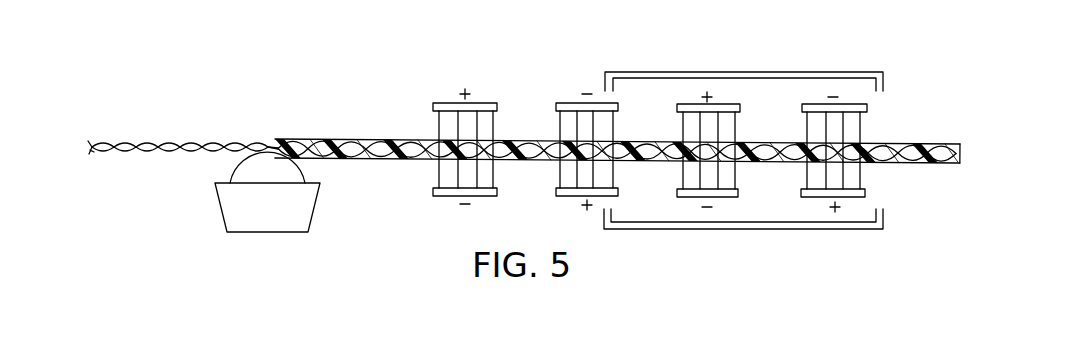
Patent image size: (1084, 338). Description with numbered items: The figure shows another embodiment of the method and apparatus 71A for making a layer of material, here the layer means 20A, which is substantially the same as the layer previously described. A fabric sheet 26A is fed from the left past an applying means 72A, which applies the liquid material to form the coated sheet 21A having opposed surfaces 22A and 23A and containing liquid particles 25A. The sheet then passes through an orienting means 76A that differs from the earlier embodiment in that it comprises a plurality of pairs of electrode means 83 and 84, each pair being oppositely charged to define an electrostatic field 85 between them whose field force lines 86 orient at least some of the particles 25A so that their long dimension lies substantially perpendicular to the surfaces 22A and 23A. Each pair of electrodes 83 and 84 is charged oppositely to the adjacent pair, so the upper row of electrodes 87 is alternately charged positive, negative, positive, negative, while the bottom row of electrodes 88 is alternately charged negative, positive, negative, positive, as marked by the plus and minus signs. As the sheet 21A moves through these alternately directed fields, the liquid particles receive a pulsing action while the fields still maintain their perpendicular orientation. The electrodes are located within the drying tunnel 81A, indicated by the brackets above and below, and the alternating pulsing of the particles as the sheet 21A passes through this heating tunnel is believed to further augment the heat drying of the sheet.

The fabric sheet 26A is at (142, 146).
The applying means 72A is at (213, 169).
The layer means 20A is at (890, 138).
The opposed surface of the sheet 22A is at (923, 141).
The sheet 21A is at (931, 160).
The opposed surface of the sheet 23A is at (900, 160).
The particles 25A is at (391, 158).
The electrode means 83 is at (443, 103).
The electrode means 84 is at (452, 197).
The electrostatic field 85 is at (487, 123).
The field force lines 86 is at (440, 122).
The orienting means 76A is at (571, 82).
The method and apparatus 71A is at (597, 66).
The drying tunnel 81A is at (689, 70).
The upper row of electrodes 87 is at (875, 108).
The bottom row of electrodes 88 is at (875, 193).